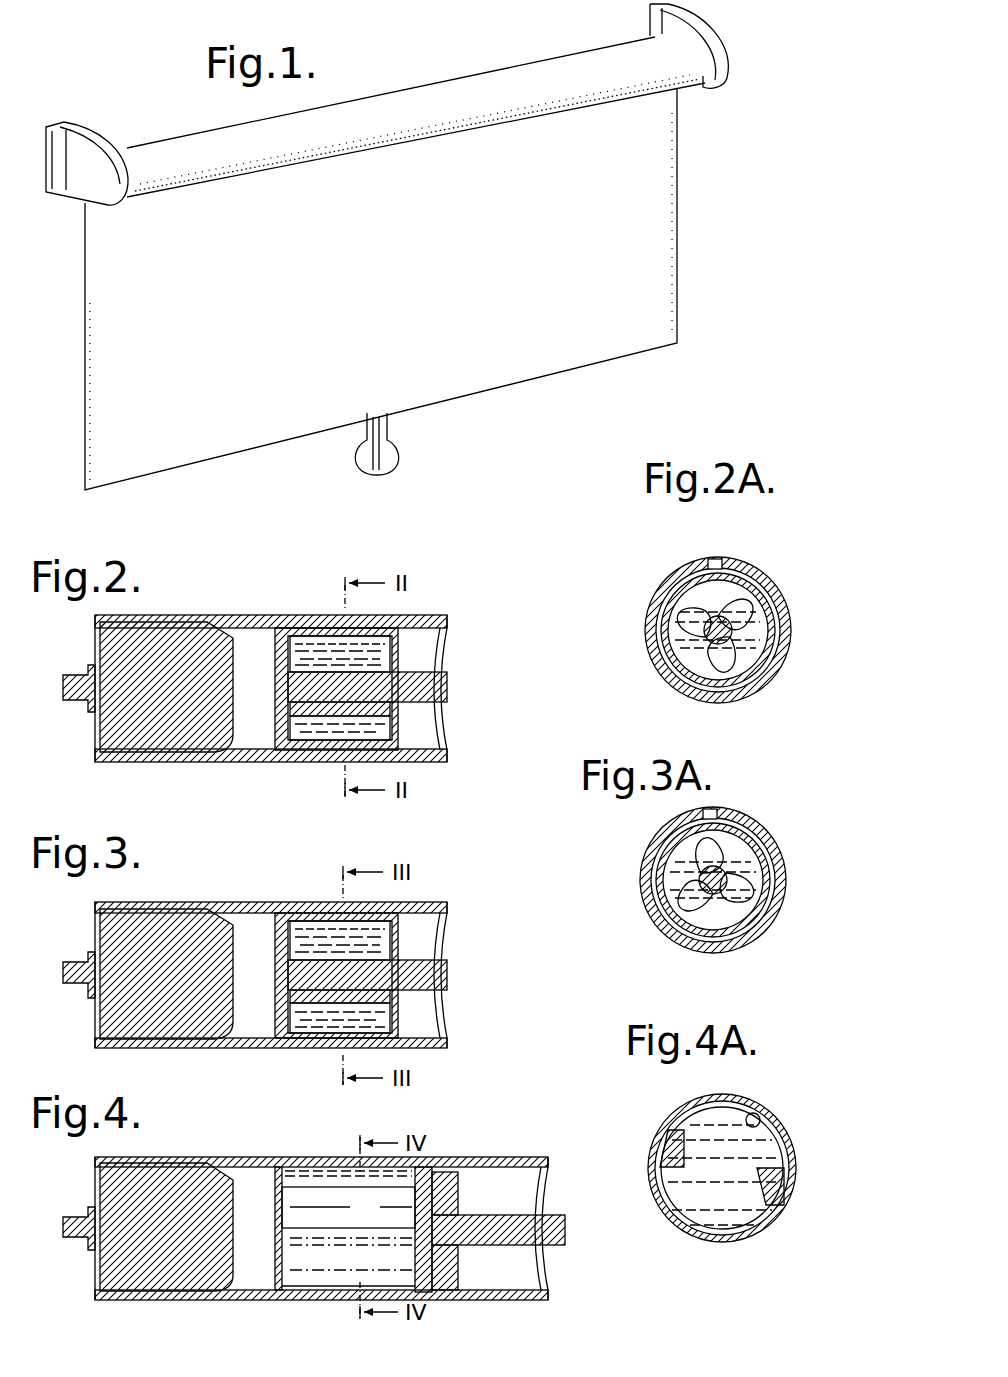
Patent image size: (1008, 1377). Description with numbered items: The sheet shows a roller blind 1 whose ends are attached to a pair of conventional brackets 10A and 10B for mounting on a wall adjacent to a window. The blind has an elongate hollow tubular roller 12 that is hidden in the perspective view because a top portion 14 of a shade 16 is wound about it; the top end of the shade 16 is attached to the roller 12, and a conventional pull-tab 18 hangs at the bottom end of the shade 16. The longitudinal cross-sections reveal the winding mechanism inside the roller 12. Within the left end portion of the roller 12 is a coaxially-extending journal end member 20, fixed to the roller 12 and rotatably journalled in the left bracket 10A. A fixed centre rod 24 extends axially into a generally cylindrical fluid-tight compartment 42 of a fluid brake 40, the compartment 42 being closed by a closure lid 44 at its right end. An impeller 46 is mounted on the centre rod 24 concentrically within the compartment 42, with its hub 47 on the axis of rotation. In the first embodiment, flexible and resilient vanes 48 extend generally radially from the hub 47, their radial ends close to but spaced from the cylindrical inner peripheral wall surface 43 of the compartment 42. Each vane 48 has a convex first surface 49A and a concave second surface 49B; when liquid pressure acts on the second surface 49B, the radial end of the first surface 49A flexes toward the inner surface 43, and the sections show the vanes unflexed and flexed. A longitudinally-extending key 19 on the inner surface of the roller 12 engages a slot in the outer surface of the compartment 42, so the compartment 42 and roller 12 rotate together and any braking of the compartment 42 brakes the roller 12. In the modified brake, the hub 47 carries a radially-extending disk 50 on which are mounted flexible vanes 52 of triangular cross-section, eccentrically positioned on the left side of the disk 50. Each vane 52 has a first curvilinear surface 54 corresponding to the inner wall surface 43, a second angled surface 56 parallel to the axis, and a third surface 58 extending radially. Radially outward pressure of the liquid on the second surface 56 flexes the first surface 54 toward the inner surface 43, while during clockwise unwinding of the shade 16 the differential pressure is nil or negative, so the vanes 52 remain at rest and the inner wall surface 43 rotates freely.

In FIG. 1, the roller blind 1 is at (705, 163).
In FIG. 1, the bracket 10A is at (118, 136).
In FIG. 1, the bracket 10B is at (662, 6).
In FIG. 2, the roller 12 is at (248, 617).
In FIG. 2A, the roller 12 is at (748, 562).
In FIG. 3, the roller 12 is at (255, 902).
In FIG. 3A, the roller 12 is at (740, 817).
In FIG. 4, the roller 12 is at (243, 1157).
In FIG. 1, the top portion 14 is at (385, 110).
In FIG. 1, the shade 16 is at (652, 291).
In FIG. 1, the pull-tab 18 is at (390, 462).
In FIG. 2A, the key 19 is at (716, 558).
In FIG. 2, the journal end member 20 is at (176, 640).
In FIG. 3, the journal end member 20 is at (158, 927).
In FIG. 4, the journal end member 20 is at (163, 1183).
In FIG. 2, the centre rod 24 is at (423, 692).
In FIG. 3, the centre rod 24 is at (418, 965).
In FIG. 4, the centre rod 24 is at (485, 1228).
In FIG. 2, the fluid brake 40 is at (445, 601).
In FIG. 3, the fluid brake 40 is at (446, 894).
In FIG. 4, the fluid brake 40 is at (562, 1262).
In FIG. 2, the fluid-tight compartment 42 is at (283, 708).
In FIG. 2A, the fluid-tight compartment 42 is at (750, 597).
In FIG. 3, the fluid-tight compartment 42 is at (284, 1007).
In FIG. 2A, the inner peripheral wall surface 43 is at (777, 635).
In FIG. 4A, the inner peripheral wall surface 43 is at (760, 1118).
In FIG. 2, the closure lid 44 is at (400, 657).
In FIG. 3, the closure lid 44 is at (400, 1013).
In FIG. 4, the closure lid 44 is at (282, 1280).
In FIG. 2, the impeller 46 is at (323, 720).
In FIG. 2A, the impeller 46 is at (695, 646).
In FIG. 3, the impeller 46 is at (332, 1000).
In FIG. 4, the impeller 46 is at (308, 1240).
In FIG. 2, the hub 47 is at (315, 665).
In FIG. 2A, the hub 47 is at (703, 603).
In FIG. 3, the hub 47 is at (323, 957).
In FIG. 4, the hub 47 is at (433, 1205).
In FIG. 2A, the vanes 48 is at (657, 607).
In FIG. 2A, the first surface 49A is at (763, 607).
In FIG. 3A, the first surface 49A is at (757, 867).
In FIG. 2A, the second surface 49B is at (767, 657).
In FIG. 3A, the second surface 49B is at (648, 897).
In FIG. 4, the disk 50 is at (428, 1200).
In FIG. 4, the vanes 52 is at (323, 1192).
In FIG. 4A, the vanes 52 is at (773, 1200).
In FIG. 4A, the first curvilinear surface 54 is at (660, 1147).
In FIG. 4A, the second angled surface 56 is at (690, 1117).
In FIG. 4A, the third surface 58 is at (783, 1153).